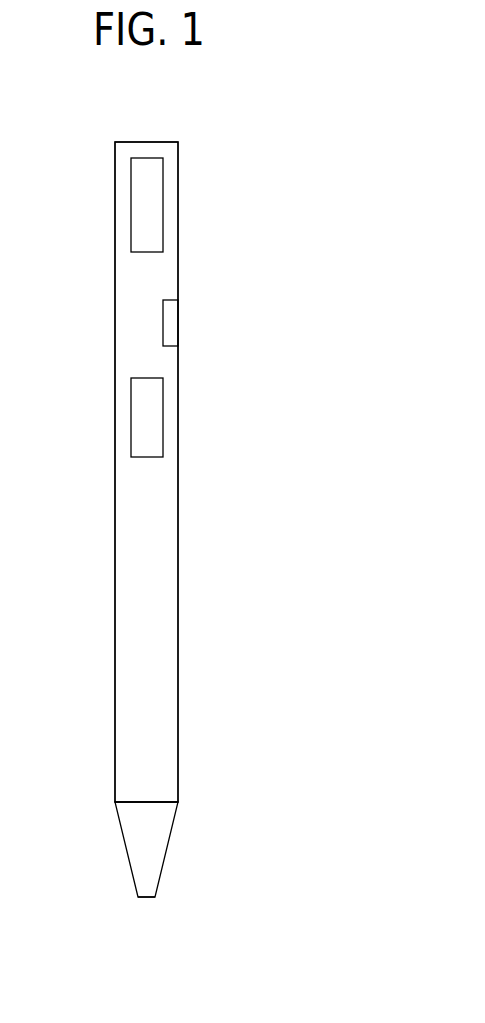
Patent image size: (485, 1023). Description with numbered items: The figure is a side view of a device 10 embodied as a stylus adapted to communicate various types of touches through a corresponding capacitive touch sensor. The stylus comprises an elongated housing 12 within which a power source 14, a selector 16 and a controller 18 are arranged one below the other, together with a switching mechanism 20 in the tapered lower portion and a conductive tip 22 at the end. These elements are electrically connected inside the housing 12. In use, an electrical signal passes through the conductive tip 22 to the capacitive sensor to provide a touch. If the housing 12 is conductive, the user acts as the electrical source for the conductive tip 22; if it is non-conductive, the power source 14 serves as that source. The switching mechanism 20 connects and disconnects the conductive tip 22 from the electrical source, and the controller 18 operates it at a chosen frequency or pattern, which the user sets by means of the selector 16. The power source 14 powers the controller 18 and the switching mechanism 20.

The device 10 is at (336, 178).
The housing 12 is at (178, 175).
The power source 14 is at (143, 217).
The selector 16 is at (178, 319).
The controller 18 is at (146, 424).
The switching mechanism 20 is at (158, 848).
The conductive tip 22 is at (146, 897).